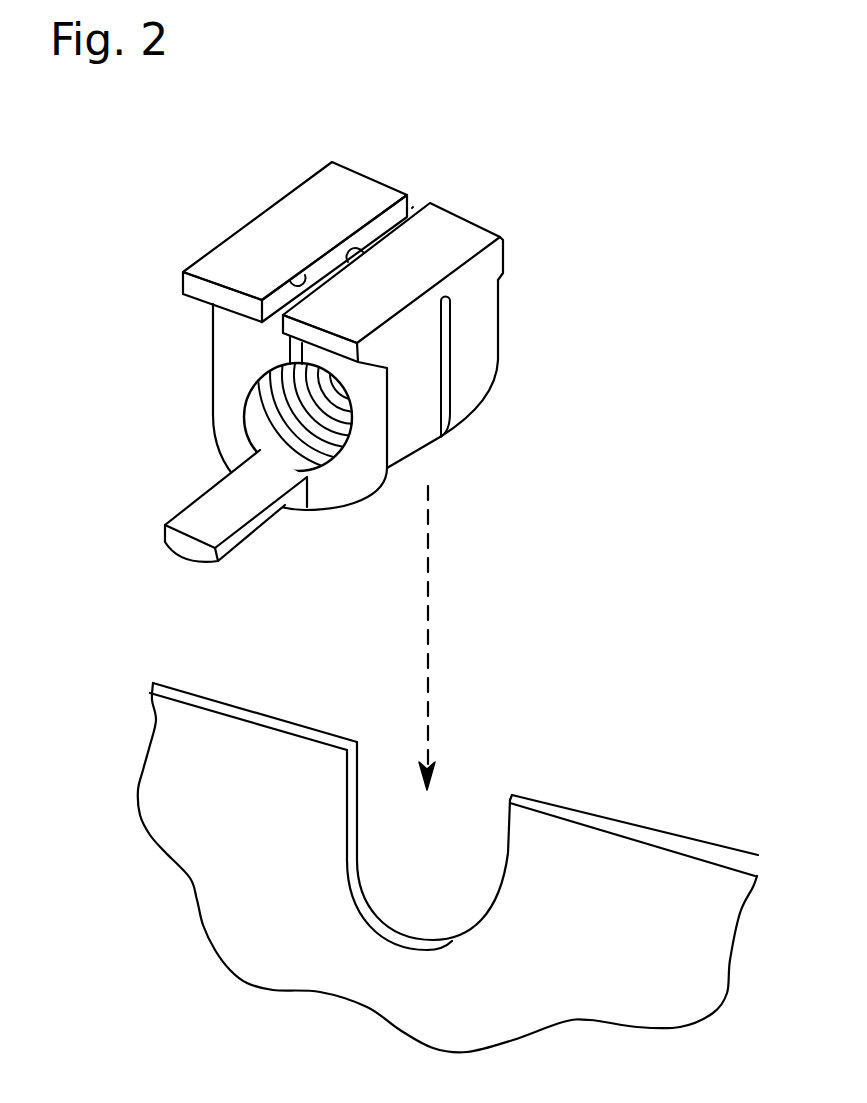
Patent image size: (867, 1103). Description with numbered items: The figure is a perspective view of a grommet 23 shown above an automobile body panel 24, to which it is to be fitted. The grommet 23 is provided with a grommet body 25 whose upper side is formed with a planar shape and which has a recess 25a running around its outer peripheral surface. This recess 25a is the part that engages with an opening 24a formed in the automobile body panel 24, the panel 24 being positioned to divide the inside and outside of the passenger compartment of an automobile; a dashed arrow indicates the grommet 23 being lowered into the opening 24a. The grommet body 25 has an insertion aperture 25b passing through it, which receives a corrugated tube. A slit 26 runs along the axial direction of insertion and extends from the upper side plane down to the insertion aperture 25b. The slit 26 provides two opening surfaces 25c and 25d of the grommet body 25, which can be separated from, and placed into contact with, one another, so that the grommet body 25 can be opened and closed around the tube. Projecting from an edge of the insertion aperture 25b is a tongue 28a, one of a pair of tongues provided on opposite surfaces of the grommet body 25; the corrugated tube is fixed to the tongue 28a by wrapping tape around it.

The grommet 23 is at (479, 204).
The automobile body panel 24 is at (653, 837).
The opening 24a is at (508, 852).
The grommet body 25 is at (482, 270).
The recess 25a is at (450, 382).
The insertion aperture 25b is at (315, 465).
The opening surface 25c is at (291, 282).
The opening surface 25d is at (365, 254).
The slit 26 is at (413, 207).
The tongue 28a is at (200, 508).